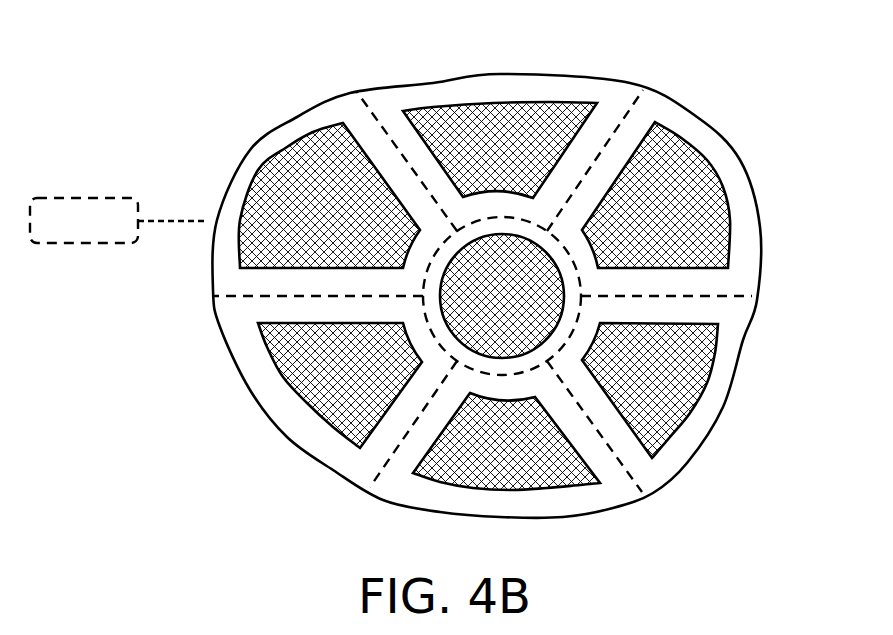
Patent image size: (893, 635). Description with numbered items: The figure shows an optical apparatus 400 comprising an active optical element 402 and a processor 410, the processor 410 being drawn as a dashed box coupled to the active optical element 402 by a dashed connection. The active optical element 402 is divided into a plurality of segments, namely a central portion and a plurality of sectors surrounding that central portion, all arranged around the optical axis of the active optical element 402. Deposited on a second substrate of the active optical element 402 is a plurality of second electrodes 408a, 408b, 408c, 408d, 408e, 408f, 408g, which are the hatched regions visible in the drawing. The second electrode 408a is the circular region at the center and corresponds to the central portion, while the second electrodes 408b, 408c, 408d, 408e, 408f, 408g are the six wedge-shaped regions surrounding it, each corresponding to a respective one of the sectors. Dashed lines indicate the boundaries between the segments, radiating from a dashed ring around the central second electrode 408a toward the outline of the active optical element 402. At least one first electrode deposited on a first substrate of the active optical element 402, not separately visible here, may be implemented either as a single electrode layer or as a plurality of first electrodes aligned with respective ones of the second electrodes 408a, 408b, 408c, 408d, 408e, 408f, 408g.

The optical apparatus 400 is at (442, 301).
The active optical element 402 is at (498, 279).
The second electrode 408a is at (331, 296).
The second electrode 408b is at (288, 179).
The second electrode 408c is at (435, 114).
The second electrode 408d is at (717, 195).
The second electrode 408e is at (718, 390).
The second electrode 408f is at (563, 483).
The second electrode 408g is at (340, 442).
The processor 410 is at (119, 160).